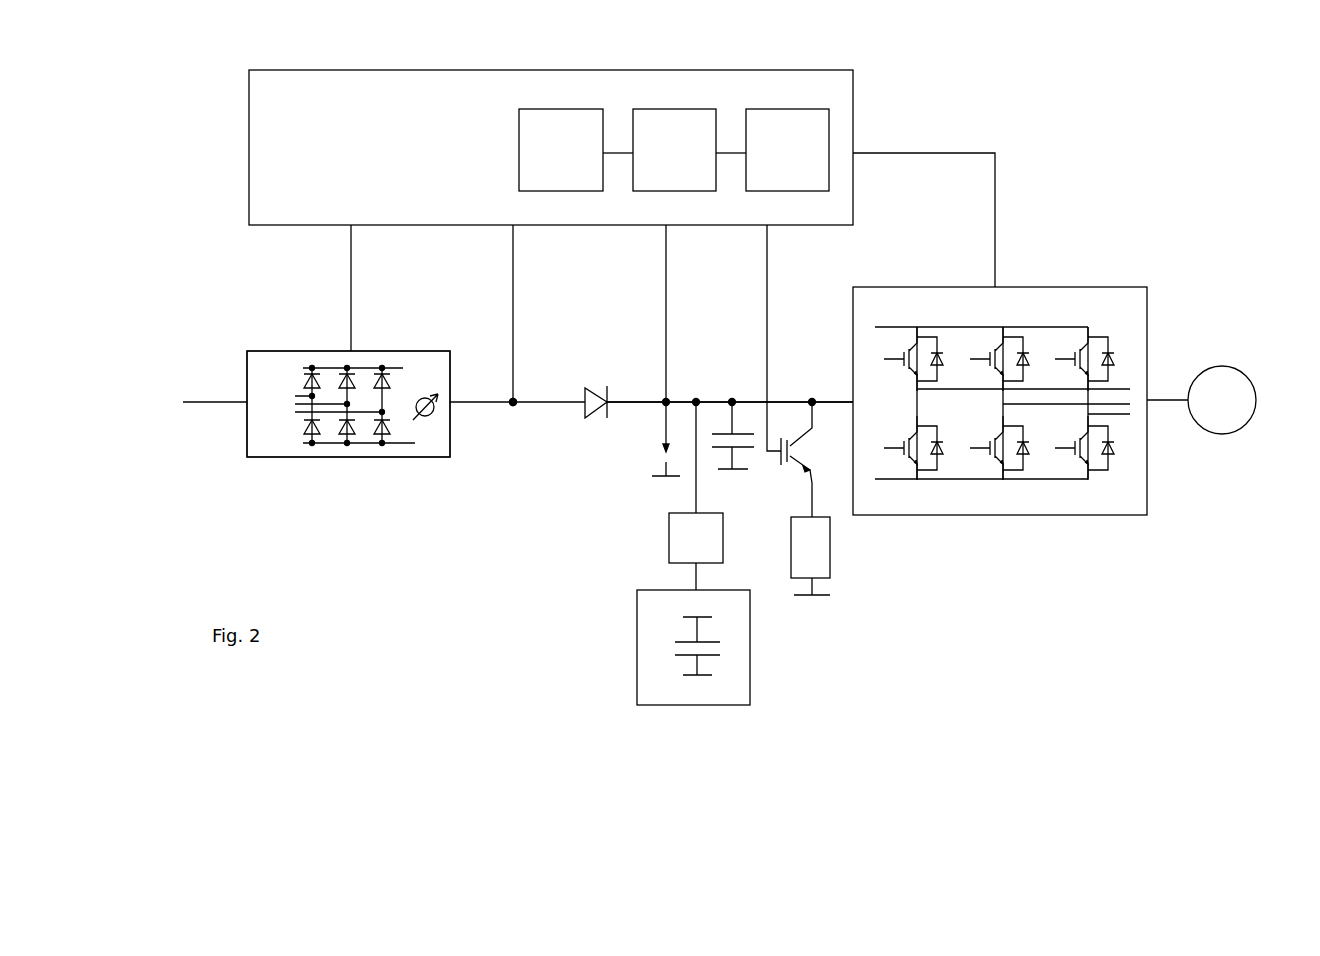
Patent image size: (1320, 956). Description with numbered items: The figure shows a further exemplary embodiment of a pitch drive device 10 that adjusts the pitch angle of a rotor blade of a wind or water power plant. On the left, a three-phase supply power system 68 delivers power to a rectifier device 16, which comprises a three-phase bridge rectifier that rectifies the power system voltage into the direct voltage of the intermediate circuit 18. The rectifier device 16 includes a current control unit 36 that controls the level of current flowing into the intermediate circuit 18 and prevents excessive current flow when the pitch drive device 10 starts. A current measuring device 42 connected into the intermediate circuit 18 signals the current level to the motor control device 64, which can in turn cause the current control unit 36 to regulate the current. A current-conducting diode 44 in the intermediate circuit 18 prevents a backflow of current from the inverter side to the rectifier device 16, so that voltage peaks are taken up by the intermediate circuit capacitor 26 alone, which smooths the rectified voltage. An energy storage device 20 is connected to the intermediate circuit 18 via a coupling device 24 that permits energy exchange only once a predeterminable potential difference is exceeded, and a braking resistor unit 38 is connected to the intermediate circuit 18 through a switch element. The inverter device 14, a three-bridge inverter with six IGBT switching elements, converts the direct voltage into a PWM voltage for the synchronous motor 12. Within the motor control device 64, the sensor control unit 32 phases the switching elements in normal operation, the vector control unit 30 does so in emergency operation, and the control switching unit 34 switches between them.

The pitch drive device 10 is at (1033, 150).
The synchronous motor 12 is at (1212, 367).
The inverter device 14 is at (1055, 287).
The rectifier device 16 is at (305, 351).
The current control unit 36 is at (348, 404).
The intermediate circuit 18 is at (731, 399).
The energy storage device 20 is at (637, 636).
The coupling device 24 is at (696, 496).
The intermediate circuit capacitor 26 is at (744, 452).
The vector control unit 30 is at (561, 150).
The sensor control unit 32 is at (772, 150).
The control switching unit 34 is at (659, 150).
The braking resistor unit 38 is at (832, 545).
The current measuring device 42 is at (513, 405).
The current-conducting diode 44 is at (598, 390).
The motor control device 64 is at (551, 147).
The supply power system 68 is at (212, 403).